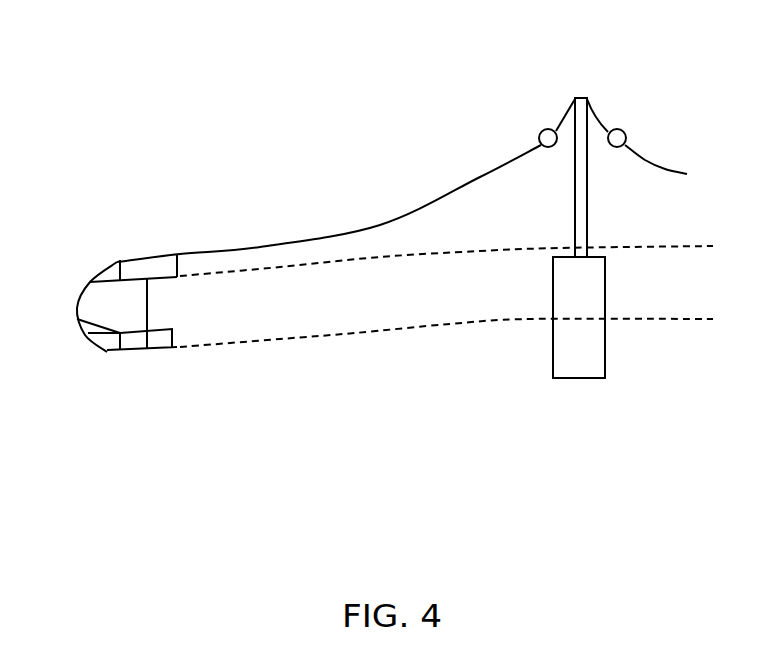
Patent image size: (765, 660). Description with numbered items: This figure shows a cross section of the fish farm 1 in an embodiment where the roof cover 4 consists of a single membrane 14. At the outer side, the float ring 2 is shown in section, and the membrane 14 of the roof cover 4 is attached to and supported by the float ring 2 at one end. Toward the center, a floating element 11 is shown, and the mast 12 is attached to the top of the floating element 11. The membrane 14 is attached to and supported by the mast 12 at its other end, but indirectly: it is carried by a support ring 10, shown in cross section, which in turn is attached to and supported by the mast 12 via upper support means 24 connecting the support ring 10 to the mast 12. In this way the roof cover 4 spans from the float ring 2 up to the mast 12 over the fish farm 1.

The wing assembly 1 is at (114, 171).
The float ring 2 is at (112, 353).
The roof cover 4 is at (405, 207).
The support ring 10 is at (544, 130).
The floating element 11 is at (585, 358).
The mast 12 is at (580, 163).
The membrane 14 is at (218, 250).
The upper support means 24 is at (598, 112).